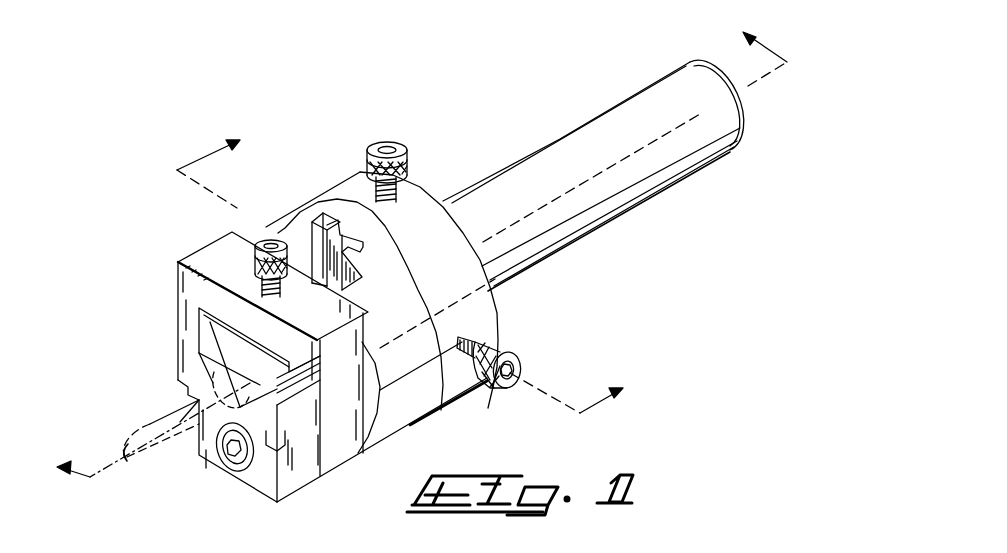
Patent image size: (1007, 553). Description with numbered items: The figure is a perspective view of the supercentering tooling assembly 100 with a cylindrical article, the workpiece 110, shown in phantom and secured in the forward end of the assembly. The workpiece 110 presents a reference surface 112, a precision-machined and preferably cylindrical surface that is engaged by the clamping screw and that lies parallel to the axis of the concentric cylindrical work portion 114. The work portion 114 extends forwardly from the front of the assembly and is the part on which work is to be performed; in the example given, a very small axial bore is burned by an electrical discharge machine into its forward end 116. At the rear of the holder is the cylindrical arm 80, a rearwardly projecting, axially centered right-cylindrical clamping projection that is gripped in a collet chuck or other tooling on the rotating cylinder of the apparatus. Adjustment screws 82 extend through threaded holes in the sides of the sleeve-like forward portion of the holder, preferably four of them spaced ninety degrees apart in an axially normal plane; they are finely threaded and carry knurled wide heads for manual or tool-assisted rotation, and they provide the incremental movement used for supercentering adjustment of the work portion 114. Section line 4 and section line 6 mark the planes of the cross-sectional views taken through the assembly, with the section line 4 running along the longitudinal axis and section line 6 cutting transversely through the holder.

The section line 4- 4 is at (422, 248).
The section line 6- 6 is at (408, 270).
The cylindrical arm 80 is at (564, 135).
The adjustment screws 82 is at (387, 140).
The supercentering tooling assembly 100 is at (433, 182).
The workpiece 110 is at (180, 452).
The reference surface 112 is at (250, 357).
The work portion 114 is at (174, 414).
The forward end 116 is at (126, 464).